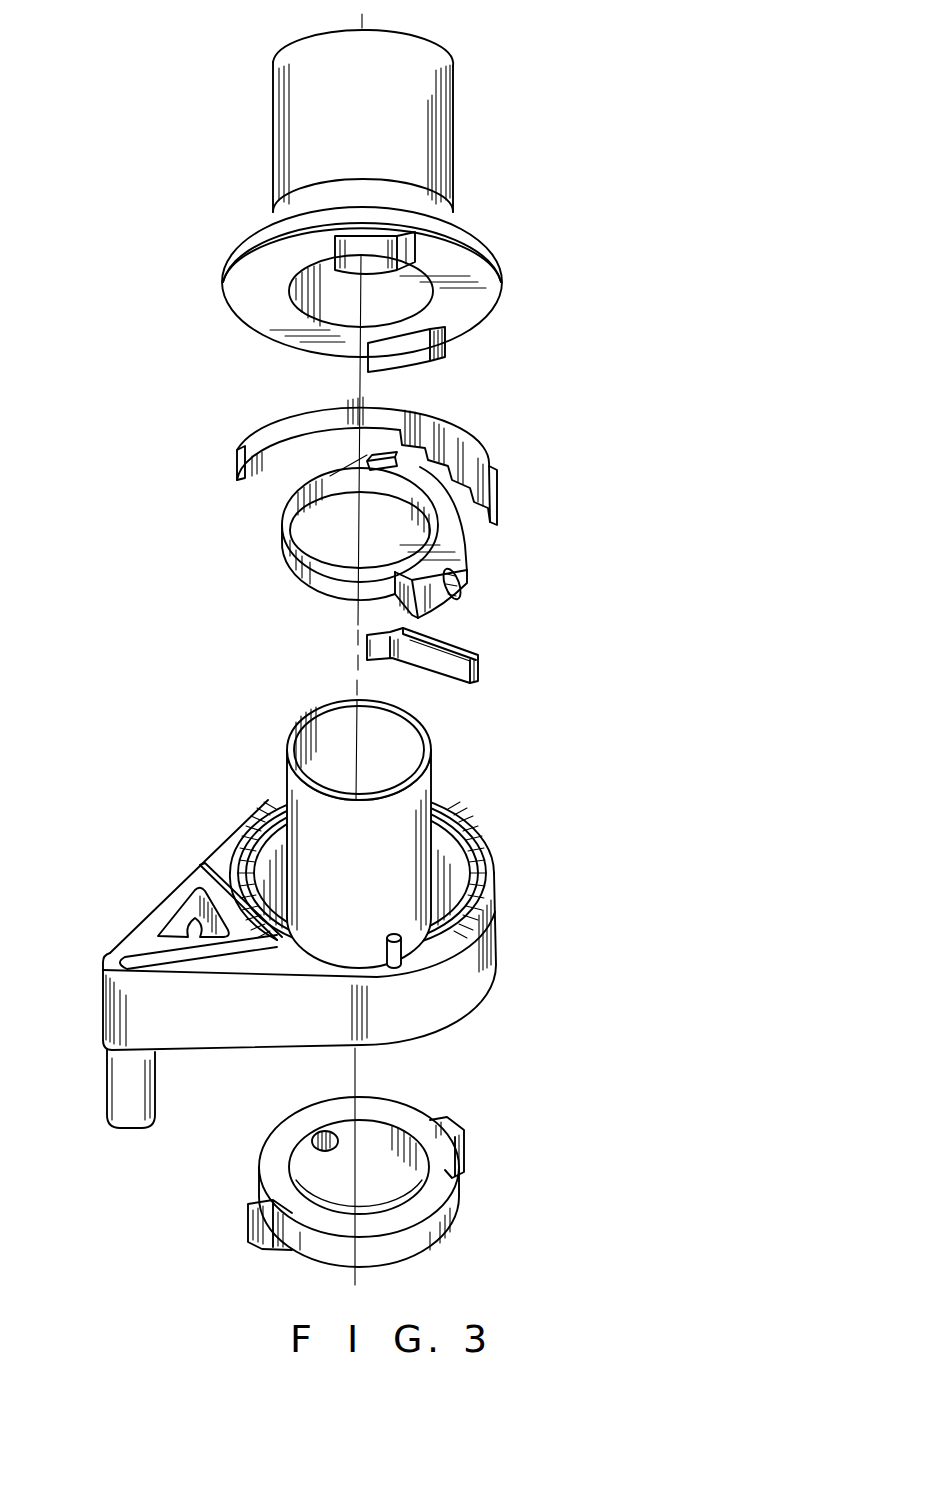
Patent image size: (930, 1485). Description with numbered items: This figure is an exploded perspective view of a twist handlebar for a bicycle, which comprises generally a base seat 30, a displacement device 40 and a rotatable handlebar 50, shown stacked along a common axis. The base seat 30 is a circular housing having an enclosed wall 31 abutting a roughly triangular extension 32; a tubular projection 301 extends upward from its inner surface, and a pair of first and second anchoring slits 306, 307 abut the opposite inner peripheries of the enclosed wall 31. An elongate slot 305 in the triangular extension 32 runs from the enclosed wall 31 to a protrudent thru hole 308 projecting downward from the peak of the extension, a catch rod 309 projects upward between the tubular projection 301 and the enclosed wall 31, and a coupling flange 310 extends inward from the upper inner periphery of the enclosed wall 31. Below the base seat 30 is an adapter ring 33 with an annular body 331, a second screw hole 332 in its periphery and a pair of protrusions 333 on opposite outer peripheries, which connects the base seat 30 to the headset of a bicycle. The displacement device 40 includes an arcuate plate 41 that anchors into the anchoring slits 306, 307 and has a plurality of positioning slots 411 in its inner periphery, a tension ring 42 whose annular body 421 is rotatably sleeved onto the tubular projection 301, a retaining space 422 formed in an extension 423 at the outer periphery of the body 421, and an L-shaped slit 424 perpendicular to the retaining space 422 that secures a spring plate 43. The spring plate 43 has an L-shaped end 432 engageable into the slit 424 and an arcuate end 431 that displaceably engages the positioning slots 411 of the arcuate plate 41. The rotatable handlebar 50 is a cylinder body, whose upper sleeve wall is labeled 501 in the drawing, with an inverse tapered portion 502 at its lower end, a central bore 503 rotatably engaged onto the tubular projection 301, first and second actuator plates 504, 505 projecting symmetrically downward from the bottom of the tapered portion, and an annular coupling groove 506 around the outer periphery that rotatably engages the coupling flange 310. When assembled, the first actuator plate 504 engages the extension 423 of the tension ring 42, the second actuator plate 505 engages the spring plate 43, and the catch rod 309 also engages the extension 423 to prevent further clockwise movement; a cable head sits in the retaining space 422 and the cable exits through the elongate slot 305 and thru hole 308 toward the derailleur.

The rotatable handlebar 50 is at (460, 62).
The sleeve wall 501 is at (430, 100).
The inverse tapered portion 502 is at (270, 208).
The central bore 503 is at (405, 290).
The first actuator plate 504 is at (413, 237).
The second actuator plate 505 is at (428, 355).
The annular coupling groove 506 is at (272, 215).
The displacement device 40 is at (198, 497).
The arcuate plate 41 is at (280, 423).
The positioning slots 411 is at (443, 430).
The tension ring 42 is at (290, 570).
The annular body 421 is at (345, 555).
The retaining space 422 is at (468, 577).
The extension 423 is at (447, 537).
The L-shaped slit 424 is at (380, 458).
The spring plate 43 is at (437, 657).
The arcuate end 431 is at (478, 660).
The L-shaped end 432 is at (378, 655).
The base seat 30 is at (490, 942).
The enclosed wall 31 is at (463, 813).
The triangular extension 32 is at (298, 1022).
The tubular projection 301 is at (420, 950).
The elongate slot 305 is at (152, 960).
The first anchoring slit 306 is at (487, 887).
The second anchoring slit 307 is at (237, 855).
The protrudent thru hole 308 is at (130, 1083).
The catch rod 309 is at (403, 967).
The coupling flange 310 is at (200, 897).
The adapter ring 33 is at (462, 1122).
The annular body 331 is at (377, 1197).
The second screw hole 332 is at (313, 1140).
The protrusions 333 is at (253, 1217).